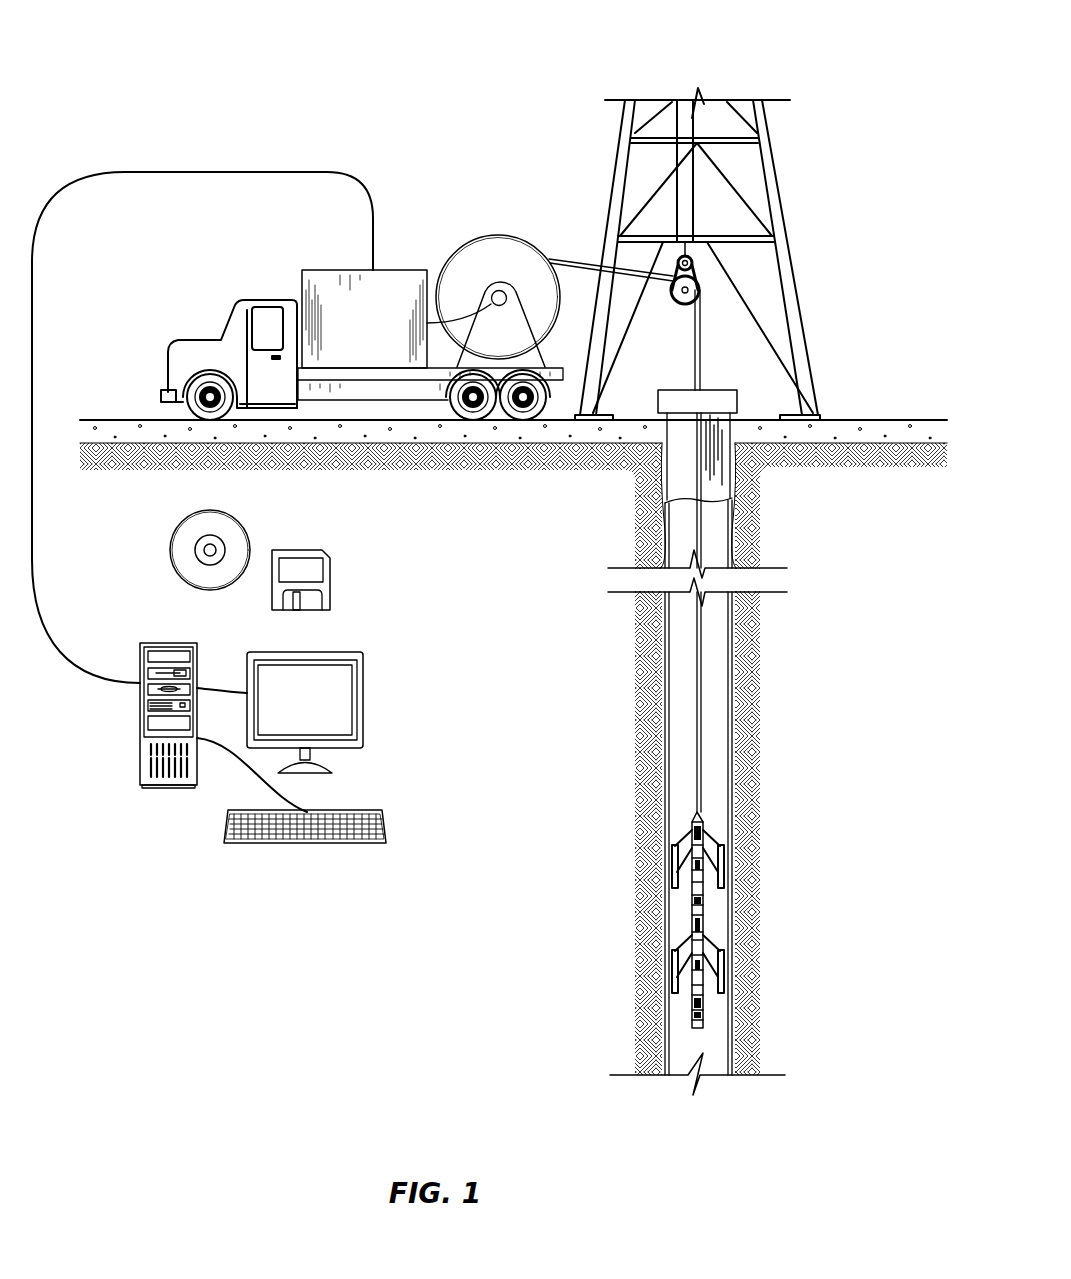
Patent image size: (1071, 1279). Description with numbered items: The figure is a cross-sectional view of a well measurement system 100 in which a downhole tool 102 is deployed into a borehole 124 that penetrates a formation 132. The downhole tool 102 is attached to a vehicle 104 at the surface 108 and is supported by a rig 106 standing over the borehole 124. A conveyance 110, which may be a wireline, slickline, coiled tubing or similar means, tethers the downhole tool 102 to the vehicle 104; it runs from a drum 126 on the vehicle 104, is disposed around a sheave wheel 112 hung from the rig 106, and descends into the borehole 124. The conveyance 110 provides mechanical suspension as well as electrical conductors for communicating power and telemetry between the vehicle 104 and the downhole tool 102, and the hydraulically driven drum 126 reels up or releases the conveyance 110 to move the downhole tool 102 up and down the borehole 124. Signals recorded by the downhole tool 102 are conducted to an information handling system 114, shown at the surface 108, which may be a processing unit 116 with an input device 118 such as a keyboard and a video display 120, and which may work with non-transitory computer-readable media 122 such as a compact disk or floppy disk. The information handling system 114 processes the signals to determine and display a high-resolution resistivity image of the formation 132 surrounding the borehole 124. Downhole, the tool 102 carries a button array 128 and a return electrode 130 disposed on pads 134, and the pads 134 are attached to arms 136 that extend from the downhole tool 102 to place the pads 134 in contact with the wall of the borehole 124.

The well measurement system 100 is at (205, 50).
The downhole tool 102 is at (665, 878).
The vehicle 104 is at (318, 268).
The rig 106 is at (780, 160).
The surface 108 is at (870, 420).
The conveyance 110 is at (693, 665).
The sheave wheel 112 is at (682, 305).
The information handling system 114 is at (182, 866).
The processing unit 116 is at (172, 643).
The input device 118 is at (387, 820).
The video display 120 is at (363, 693).
The non-transitory computer-readable media 122 is at (250, 537).
The borehole 124 is at (720, 543).
The drum 126 is at (488, 238).
The button array 128 is at (727, 958).
The return electrode 130 is at (727, 982).
The formation 132 is at (900, 663).
The pad 134 is at (730, 833).
The arm 136 is at (717, 937).